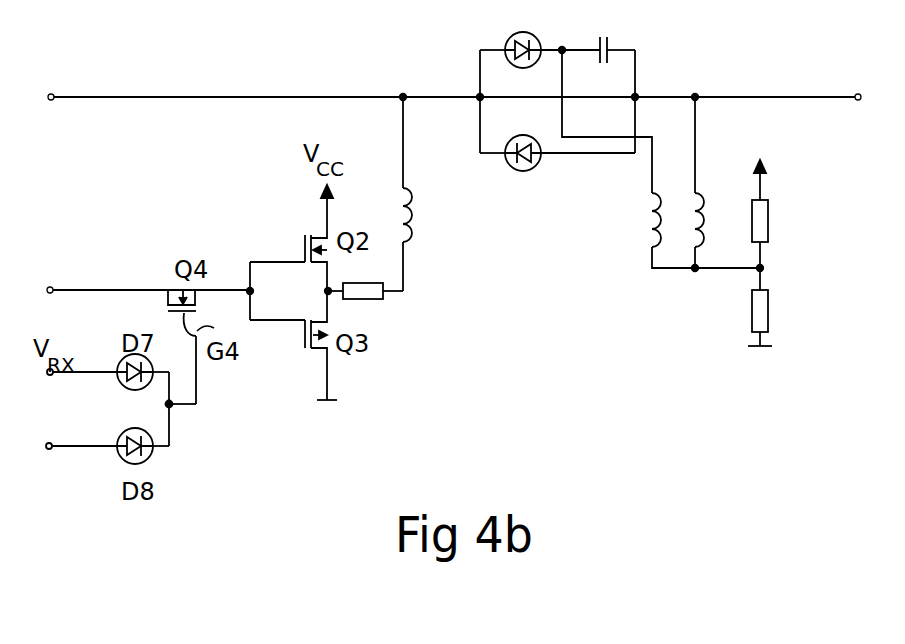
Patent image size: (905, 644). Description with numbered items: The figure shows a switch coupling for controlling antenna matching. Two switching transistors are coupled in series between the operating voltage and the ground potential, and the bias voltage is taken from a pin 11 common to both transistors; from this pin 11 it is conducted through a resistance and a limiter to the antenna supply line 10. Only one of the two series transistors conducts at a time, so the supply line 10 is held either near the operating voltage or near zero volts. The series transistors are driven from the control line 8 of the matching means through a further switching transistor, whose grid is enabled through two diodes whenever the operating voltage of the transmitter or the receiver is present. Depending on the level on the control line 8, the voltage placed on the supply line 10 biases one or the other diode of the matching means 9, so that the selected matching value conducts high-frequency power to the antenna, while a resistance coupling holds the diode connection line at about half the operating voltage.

The control line of the matching means 8 is at (115, 289).
The matching means 9 is at (651, 405).
The antenna supply line 10 is at (171, 96).
The pin common to the transistors 11 is at (330, 293).